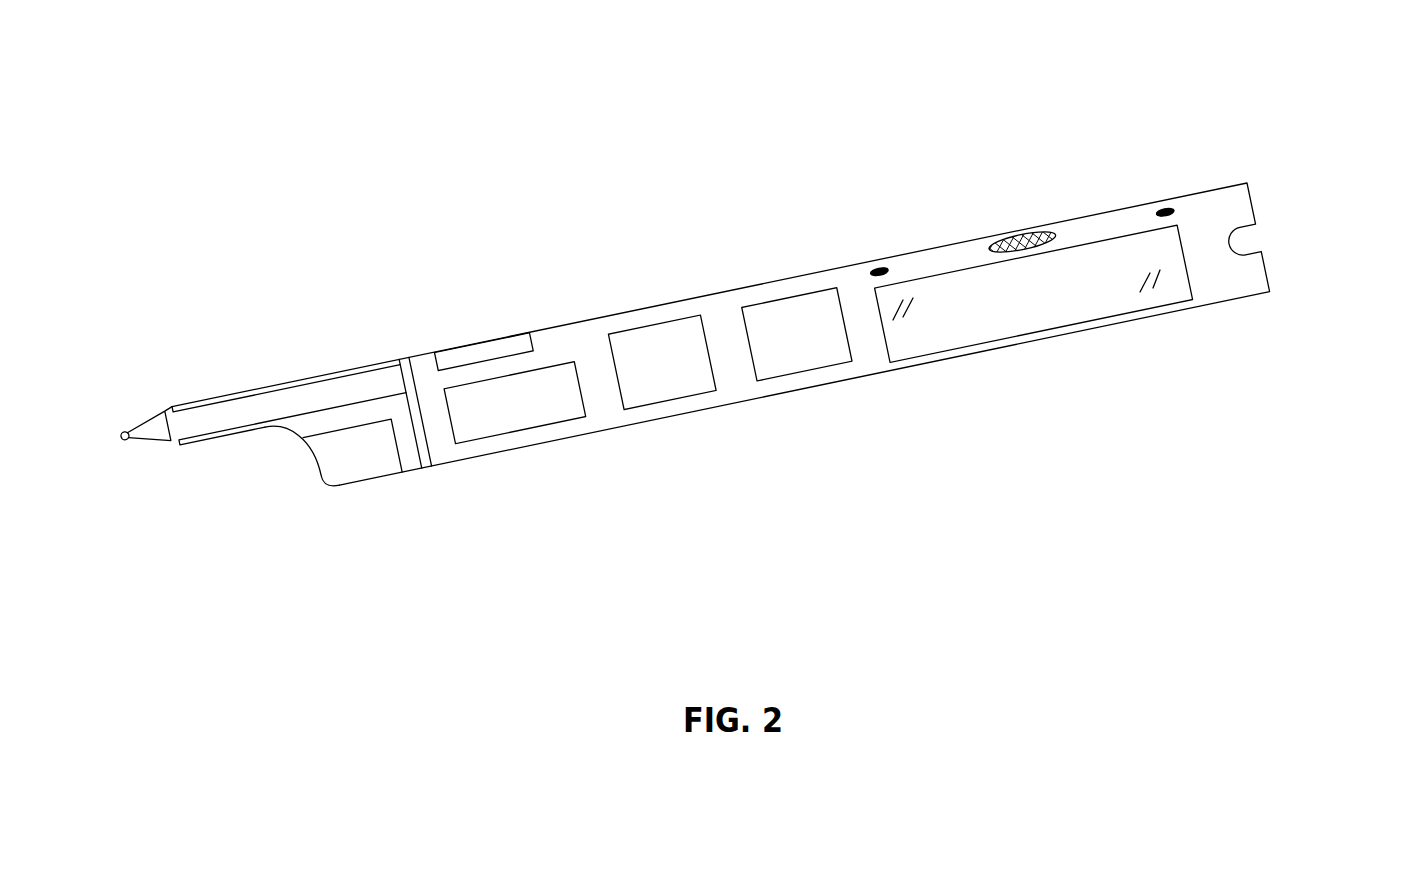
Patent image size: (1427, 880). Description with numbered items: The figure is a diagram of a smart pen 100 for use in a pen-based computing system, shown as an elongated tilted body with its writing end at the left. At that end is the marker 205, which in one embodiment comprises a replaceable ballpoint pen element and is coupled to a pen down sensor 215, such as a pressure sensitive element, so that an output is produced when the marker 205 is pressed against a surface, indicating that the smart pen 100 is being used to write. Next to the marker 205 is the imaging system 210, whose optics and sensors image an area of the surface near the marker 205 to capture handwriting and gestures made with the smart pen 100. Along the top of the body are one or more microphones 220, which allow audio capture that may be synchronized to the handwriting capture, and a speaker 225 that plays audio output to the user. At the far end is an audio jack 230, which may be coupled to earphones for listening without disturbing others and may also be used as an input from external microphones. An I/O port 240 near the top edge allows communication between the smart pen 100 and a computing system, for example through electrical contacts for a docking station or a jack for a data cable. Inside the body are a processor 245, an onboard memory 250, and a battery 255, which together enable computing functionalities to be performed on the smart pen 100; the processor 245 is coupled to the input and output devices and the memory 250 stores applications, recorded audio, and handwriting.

The smart pen 100 is at (609, 109).
The marker 205 is at (125, 432).
The imaging system 210 is at (380, 468).
The pen down sensor 215 is at (430, 469).
The microphones 220 is at (880, 267).
The speaker 225 is at (1023, 234).
The audio jack 230 is at (1255, 240).
The I/O port 240 is at (494, 333).
The processor 245 is at (775, 347).
The onboard memory 250 is at (644, 377).
The battery 255 is at (490, 417).